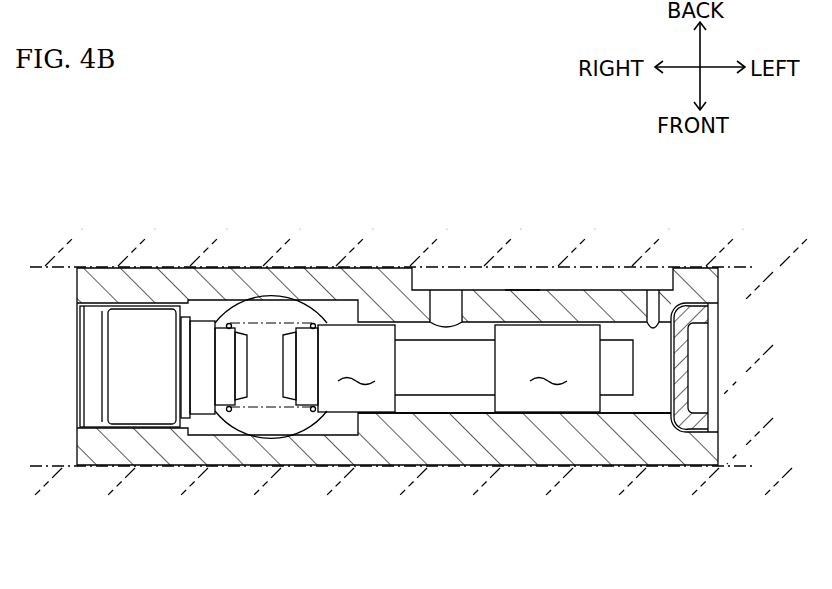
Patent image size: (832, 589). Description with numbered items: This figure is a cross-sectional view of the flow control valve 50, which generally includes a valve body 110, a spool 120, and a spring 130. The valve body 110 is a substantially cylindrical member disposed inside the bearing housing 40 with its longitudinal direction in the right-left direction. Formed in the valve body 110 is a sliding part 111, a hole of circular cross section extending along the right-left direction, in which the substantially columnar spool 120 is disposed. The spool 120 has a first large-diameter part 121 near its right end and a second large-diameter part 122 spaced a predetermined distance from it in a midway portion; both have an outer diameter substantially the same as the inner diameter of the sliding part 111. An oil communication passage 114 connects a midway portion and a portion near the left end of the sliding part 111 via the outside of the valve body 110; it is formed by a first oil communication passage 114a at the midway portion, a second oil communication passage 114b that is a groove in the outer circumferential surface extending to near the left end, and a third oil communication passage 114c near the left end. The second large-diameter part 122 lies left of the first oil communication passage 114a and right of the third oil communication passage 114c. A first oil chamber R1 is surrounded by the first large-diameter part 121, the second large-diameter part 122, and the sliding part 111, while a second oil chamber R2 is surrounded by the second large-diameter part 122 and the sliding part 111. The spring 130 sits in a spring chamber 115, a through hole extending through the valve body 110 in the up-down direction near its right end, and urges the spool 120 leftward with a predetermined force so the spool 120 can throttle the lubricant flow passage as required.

The bearing housing 40 is at (131, 256).
The flow control valve 50 is at (394, 344).
The valve body 110 is at (216, 282).
The sliding part 111 is at (415, 404).
The oil communication passage 114 is at (548, 237).
The first oil communication passage 114a is at (443, 298).
The second oil communication passage 114b is at (523, 290).
The third oil communication passage 114c is at (656, 297).
The spring chamber 115 is at (257, 302).
The spool 120 is at (470, 350).
The first large-diameter part 121 is at (343, 333).
The second large-diameter part 122 is at (573, 333).
The spring 130 is at (258, 410).
The first oil chamber R1 is at (468, 404).
The second oil chamber R2 is at (624, 414).